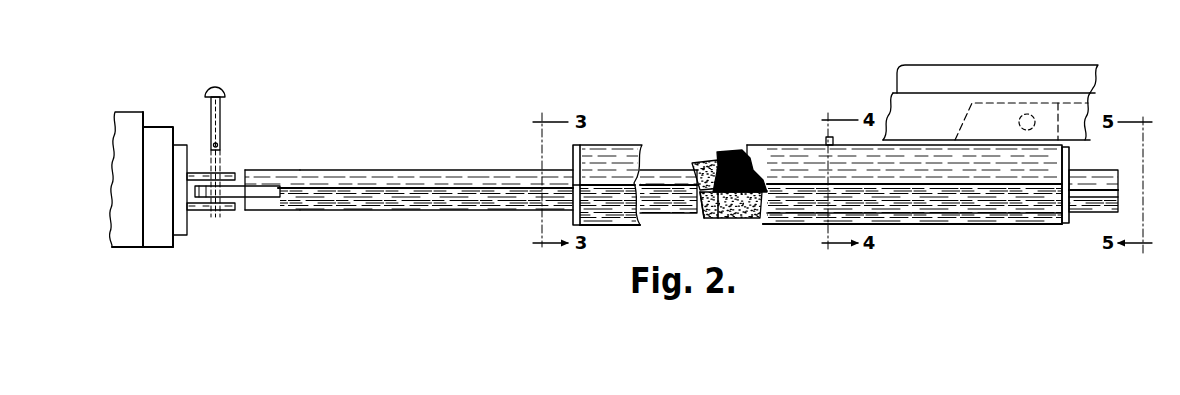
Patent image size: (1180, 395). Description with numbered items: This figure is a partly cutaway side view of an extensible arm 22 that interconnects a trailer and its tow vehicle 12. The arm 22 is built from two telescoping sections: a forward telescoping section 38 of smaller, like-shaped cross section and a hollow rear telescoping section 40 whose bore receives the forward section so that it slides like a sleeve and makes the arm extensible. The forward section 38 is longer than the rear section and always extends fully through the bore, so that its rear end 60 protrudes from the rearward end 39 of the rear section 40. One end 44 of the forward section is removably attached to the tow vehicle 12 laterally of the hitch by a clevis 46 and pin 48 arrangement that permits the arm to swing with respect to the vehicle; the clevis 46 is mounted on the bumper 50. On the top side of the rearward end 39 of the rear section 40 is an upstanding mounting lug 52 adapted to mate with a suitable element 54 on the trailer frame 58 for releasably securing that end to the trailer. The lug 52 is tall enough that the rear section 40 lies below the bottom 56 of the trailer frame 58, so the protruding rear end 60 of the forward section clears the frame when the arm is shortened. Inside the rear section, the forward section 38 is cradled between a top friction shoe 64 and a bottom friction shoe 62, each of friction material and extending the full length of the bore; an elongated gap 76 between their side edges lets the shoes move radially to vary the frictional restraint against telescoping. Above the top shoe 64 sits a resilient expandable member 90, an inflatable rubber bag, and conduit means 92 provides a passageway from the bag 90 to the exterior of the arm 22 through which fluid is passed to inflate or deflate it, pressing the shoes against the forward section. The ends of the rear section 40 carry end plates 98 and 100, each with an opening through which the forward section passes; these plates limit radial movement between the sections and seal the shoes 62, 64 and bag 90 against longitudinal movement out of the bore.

The tow vehicle 12 is at (120, 248).
The bumper 50 is at (160, 248).
The clevis 46 is at (197, 210).
The pin 48 is at (221, 117).
The end of the forward section 44 is at (250, 171).
The forward telescoping section 38 is at (428, 171).
The end plate 98 is at (574, 160).
The top friction shoe 64 is at (712, 162).
The resilient expandable member 90 is at (740, 151).
The bottom friction shoe 62 is at (724, 212).
The elongated gap 76 is at (714, 214).
The rear telescoping section 40 is at (788, 146).
The arm 22 is at (806, 227).
The rearward end of the rear section 39 is at (1012, 225).
The conduit means 92 is at (826, 143).
The trailer frame 58 is at (1050, 72).
The bottom of the trailer frame 56 is at (928, 141).
The mounting lug 52 is at (1090, 104).
The mating element 54 is at (1080, 130).
The end plate 100 is at (1069, 160).
The rear end of the forward section 60 is at (1098, 212).